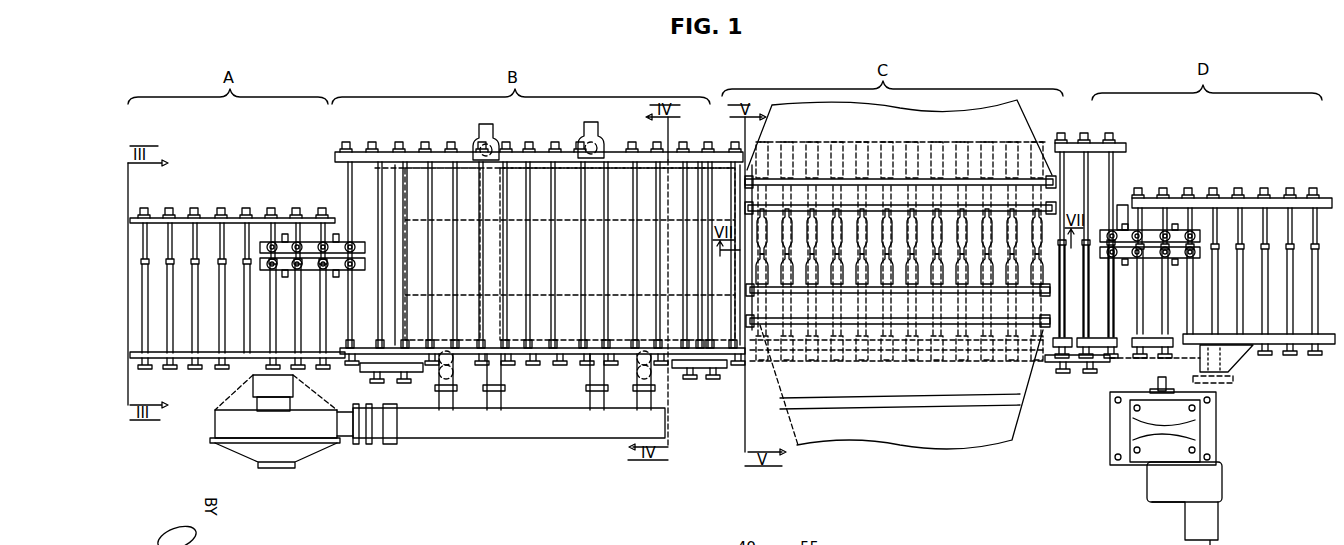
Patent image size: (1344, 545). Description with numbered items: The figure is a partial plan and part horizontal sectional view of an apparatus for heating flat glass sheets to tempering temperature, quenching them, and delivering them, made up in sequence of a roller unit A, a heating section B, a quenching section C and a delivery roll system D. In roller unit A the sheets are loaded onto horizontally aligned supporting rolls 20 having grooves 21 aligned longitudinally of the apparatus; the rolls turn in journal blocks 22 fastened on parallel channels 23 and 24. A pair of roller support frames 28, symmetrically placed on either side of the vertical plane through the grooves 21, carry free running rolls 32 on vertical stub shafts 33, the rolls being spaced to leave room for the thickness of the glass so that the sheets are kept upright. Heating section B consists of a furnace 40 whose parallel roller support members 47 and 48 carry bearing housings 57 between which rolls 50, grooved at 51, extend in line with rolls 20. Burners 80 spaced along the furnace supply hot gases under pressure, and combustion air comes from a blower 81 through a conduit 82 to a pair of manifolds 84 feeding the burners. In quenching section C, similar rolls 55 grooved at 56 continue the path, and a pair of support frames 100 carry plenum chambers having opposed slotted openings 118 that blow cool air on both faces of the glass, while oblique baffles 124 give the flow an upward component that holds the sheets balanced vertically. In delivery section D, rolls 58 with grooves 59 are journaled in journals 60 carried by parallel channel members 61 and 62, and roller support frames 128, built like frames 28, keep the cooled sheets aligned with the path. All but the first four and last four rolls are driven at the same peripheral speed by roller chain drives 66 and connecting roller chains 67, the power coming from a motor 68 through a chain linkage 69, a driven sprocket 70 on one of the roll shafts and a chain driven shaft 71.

The supporting rolls 20 is at (248, 330).
The grooves 21 is at (210, 258).
The journal blocks 22 is at (232, 199).
The parallel channel 23 is at (163, 217).
The parallel channel 24 is at (148, 370).
The roller support frames 28 is at (257, 239).
The free running rolls 32 is at (312, 242).
The vertical stub shafts 33 is at (351, 242).
The furnace 40 is at (385, 149).
The roller support member 47 is at (526, 356).
The roller support member 48 is at (414, 152).
The rolls 50 is at (569, 151).
The grooves 51 is at (562, 258).
The rolls 55 is at (716, 151).
The grooves 56 is at (982, 232).
The bearing housings 57 is at (652, 151).
The rolls 58 is at (1262, 228).
The grooves 59 is at (1289, 240).
The journals 60 is at (1179, 230).
The parallel channel member 61 is at (1321, 204).
The parallel channel member 62 is at (1319, 355).
The roller chain drives 66 is at (312, 370).
The roller chains 67 is at (390, 383).
The motor 68 is at (1175, 417).
The chain linkage 69 is at (1210, 385).
The driven sprocket 70 is at (1228, 374).
The chain driven shaft 71 is at (1200, 365).
The burners 80 is at (504, 143).
The blower 81 is at (215, 425).
The conduit 82 is at (508, 437).
The manifolds 84 is at (492, 405).
The support frames 100 is at (1055, 192).
The slotted openings 118 is at (830, 256).
The oblique baffles 124 is at (790, 256).
The roller support frames 128 is at (1204, 226).